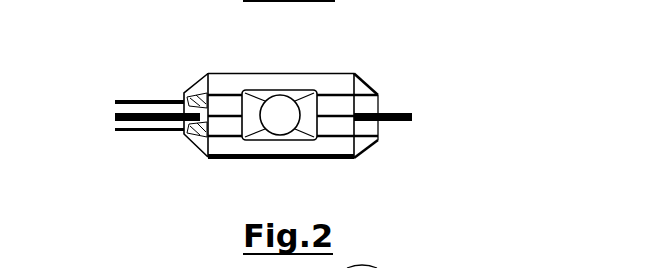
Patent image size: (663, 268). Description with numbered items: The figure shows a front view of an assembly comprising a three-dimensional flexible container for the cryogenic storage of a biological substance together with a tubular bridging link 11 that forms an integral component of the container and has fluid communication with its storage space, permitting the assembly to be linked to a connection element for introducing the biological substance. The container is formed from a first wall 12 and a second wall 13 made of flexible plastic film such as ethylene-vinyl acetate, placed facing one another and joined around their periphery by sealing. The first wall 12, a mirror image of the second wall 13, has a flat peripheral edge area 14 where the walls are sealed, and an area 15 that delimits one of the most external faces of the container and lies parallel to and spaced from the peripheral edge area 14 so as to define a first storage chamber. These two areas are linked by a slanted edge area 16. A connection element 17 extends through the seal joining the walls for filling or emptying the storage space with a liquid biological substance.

The tubular bridging link 11 is at (135, 100).
The first wall 12 is at (333, 159).
The second wall 13 is at (254, 66).
The peripheral edge area 14 is at (388, 113).
The area delimiting one of the most external faces 15 is at (237, 158).
The edge area 16 is at (184, 136).
The connection element 17 is at (302, 89).